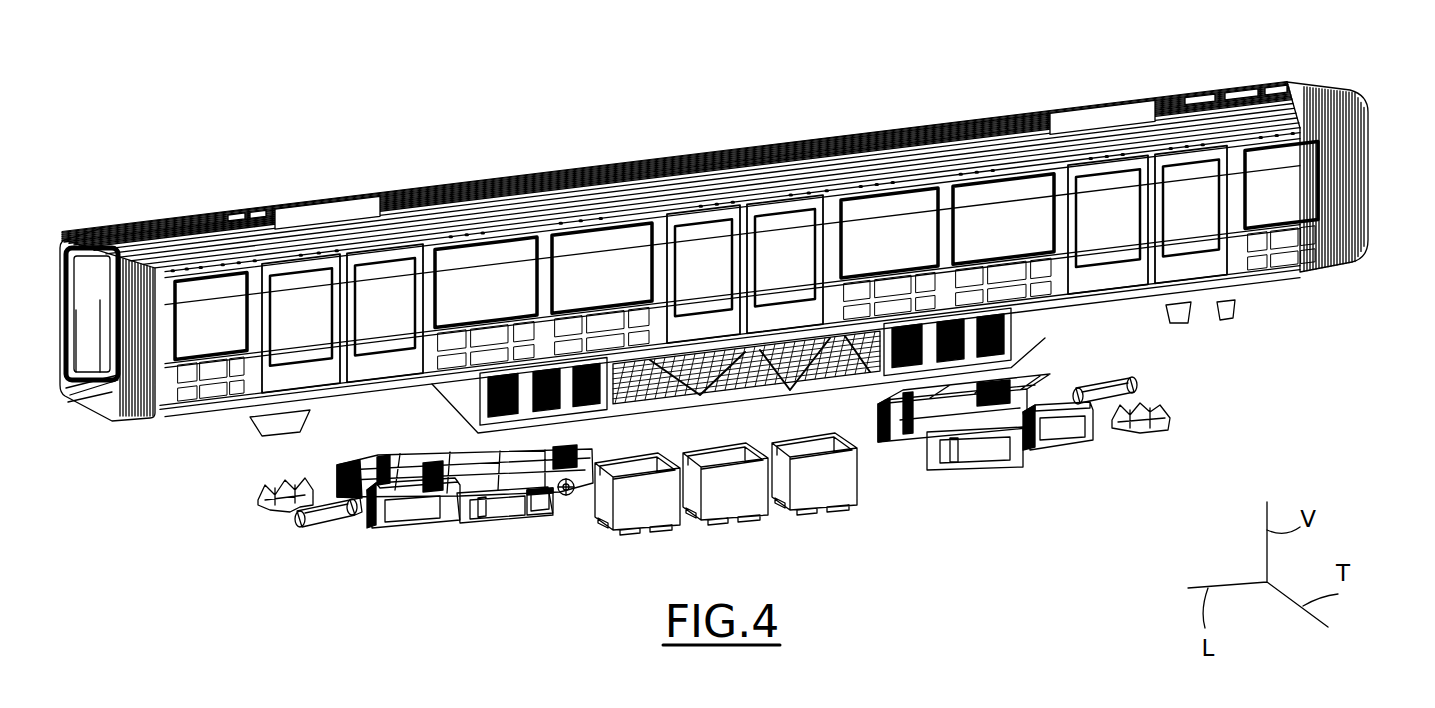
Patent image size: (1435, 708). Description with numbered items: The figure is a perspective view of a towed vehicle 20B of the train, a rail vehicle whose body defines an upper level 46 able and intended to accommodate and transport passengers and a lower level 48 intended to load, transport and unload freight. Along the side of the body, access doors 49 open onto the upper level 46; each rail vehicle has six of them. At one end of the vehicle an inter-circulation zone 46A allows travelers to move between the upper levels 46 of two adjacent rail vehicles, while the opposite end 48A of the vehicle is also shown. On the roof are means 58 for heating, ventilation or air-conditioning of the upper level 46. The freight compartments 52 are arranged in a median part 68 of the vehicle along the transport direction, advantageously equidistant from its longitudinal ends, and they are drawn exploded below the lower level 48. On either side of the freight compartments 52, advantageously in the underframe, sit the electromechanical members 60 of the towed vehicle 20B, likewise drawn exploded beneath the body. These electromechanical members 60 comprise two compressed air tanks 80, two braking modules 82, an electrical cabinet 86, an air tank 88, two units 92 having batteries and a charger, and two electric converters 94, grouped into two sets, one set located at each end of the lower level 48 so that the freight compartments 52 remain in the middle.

The towed vehicle 20B is at (152, 134).
The means for heating, ventilation or air-conditioning 58 is at (243, 208).
The upper level 46 is at (483, 262).
The inter-circulation zone 46A is at (1366, 192).
The end section 48A is at (136, 421).
The lower level 48 is at (870, 372).
The access door 49 is at (780, 222).
The median part 68 is at (876, 127).
The electromechanical members 60 is at (603, 555).
The compressed air tank 80 is at (328, 521).
The braking module 82 is at (264, 506).
The unit having batteries and a charger 92 is at (424, 525).
The electric converter 94 is at (490, 511).
The electrical cabinet 86 is at (537, 501).
The air tank 88 is at (567, 493).
The freight compartment 52 is at (808, 492).